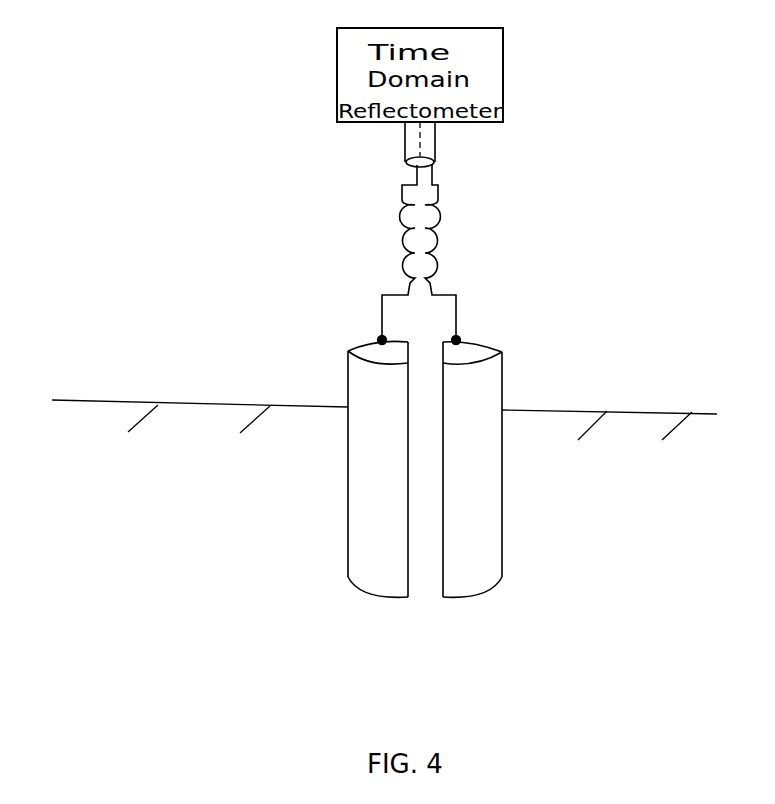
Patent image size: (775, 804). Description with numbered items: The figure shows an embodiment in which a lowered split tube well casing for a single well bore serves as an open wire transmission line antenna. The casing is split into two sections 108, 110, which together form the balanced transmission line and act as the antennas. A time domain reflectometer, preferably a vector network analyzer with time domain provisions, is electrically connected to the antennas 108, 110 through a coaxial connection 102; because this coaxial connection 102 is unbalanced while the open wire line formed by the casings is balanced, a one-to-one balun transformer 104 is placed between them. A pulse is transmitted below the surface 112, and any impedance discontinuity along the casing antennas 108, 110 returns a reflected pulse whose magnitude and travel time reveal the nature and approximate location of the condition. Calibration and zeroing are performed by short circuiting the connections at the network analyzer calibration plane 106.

The coaxial connection 102 is at (400, 147).
The balun transformer 104 is at (448, 238).
The network analyzer calibration plane 106 is at (597, 298).
The well casing section 108 is at (370, 513).
The well casing section 110 is at (477, 522).
The surface 112 is at (647, 408).